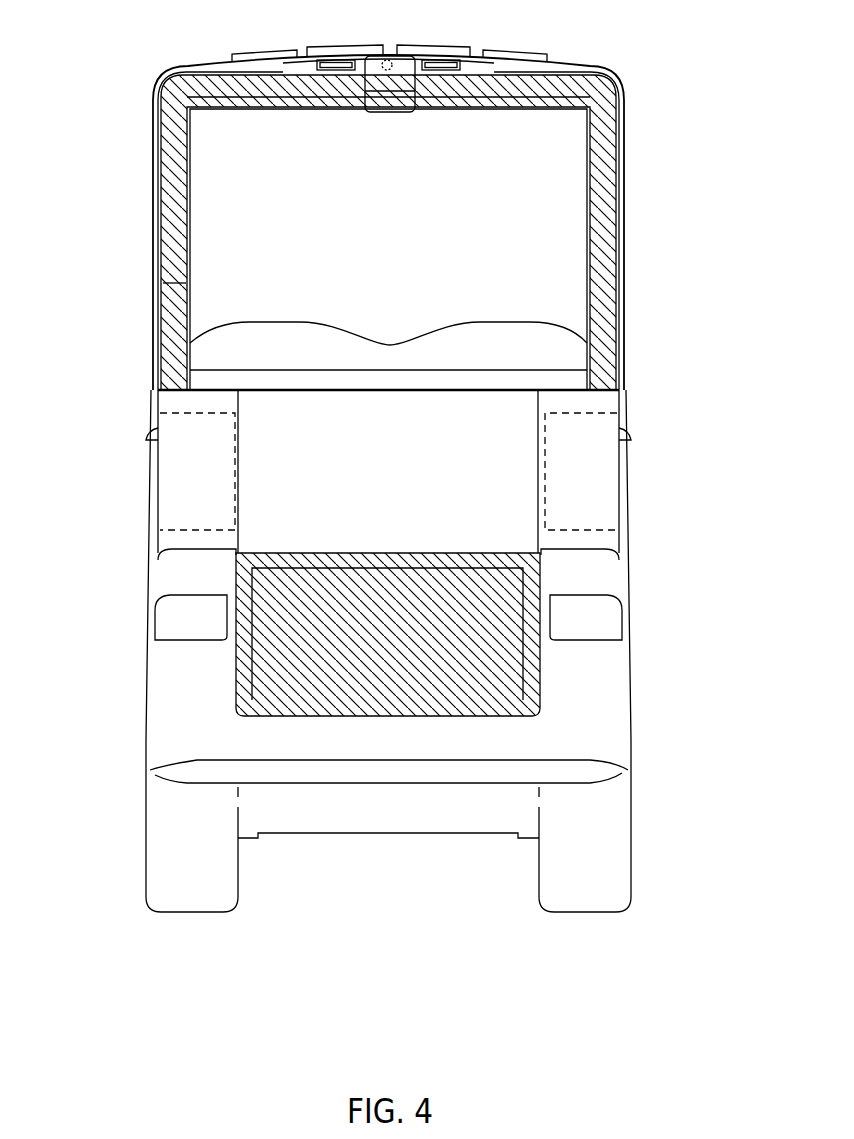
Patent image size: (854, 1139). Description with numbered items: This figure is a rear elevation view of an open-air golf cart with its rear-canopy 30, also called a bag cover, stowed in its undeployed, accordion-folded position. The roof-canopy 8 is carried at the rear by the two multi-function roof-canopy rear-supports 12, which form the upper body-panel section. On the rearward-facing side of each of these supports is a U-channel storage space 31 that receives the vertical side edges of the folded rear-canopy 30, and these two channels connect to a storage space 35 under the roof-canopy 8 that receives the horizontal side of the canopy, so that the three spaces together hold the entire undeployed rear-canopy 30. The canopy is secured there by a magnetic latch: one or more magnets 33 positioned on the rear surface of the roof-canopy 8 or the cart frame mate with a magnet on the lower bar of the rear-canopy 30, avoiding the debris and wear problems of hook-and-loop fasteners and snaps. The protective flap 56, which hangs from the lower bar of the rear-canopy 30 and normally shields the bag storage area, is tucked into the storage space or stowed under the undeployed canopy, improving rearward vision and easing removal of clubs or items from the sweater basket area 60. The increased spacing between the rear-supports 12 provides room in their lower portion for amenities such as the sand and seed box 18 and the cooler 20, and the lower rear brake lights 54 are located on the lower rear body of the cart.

The roof-canopy 8 is at (585, 68).
The multi-function roof-canopy rear-supports 12 is at (155, 172).
The sand and seed box 18 is at (593, 480).
The cooler 20 is at (153, 490).
The rear-canopy 30 is at (298, 110).
The storage space for side edges of rear-canopy 31 is at (155, 257).
The mating handle/clasp on cart frame or roof cap 33 is at (397, 105).
The storage space for rear-canopy 35 is at (284, 72).
The lower rear brake light 54 is at (165, 630).
The protective flap of rear-canopy 56 is at (397, 474).
The sweater basket area 60 is at (236, 686).